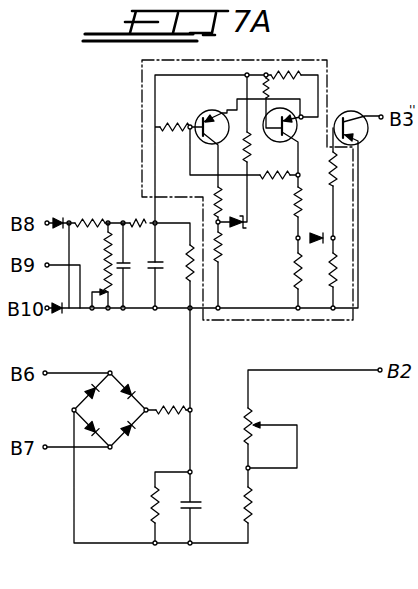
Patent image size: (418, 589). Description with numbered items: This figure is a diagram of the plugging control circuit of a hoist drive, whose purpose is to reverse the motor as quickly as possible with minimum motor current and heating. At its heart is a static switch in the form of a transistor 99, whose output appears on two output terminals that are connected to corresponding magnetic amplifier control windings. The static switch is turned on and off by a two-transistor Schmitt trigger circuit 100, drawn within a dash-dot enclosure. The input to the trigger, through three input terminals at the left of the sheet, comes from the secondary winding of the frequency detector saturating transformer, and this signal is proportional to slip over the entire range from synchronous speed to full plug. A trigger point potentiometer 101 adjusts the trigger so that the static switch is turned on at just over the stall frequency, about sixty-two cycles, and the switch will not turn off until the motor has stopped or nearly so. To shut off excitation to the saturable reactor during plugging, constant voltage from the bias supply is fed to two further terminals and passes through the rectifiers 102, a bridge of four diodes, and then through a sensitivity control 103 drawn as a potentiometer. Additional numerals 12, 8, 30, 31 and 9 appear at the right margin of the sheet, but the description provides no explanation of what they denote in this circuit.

The two-transistor Schmitt trigger circuit 100 is at (142, 82).
The transistor 99 is at (368, 138).
The trigger point potentiometer 101 is at (96, 284).
The rectifiers 102 is at (120, 447).
The sensitivity control 103 is at (262, 472).
The conductor 12 is at (409, 237).
The conductor 8 is at (409, 298).
The power supply circuit 30 is at (372, 342).
The conductor 31 is at (413, 385).
The conductor 9 is at (409, 411).